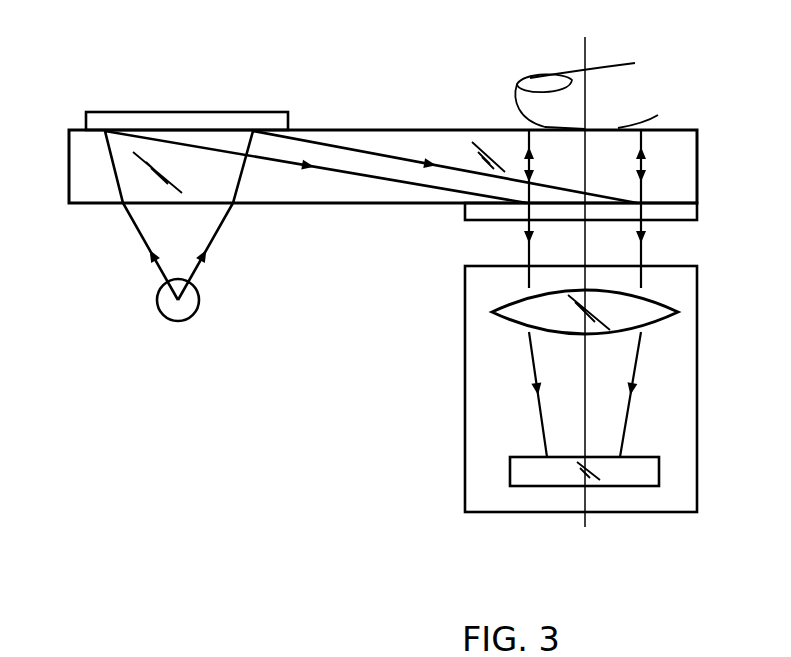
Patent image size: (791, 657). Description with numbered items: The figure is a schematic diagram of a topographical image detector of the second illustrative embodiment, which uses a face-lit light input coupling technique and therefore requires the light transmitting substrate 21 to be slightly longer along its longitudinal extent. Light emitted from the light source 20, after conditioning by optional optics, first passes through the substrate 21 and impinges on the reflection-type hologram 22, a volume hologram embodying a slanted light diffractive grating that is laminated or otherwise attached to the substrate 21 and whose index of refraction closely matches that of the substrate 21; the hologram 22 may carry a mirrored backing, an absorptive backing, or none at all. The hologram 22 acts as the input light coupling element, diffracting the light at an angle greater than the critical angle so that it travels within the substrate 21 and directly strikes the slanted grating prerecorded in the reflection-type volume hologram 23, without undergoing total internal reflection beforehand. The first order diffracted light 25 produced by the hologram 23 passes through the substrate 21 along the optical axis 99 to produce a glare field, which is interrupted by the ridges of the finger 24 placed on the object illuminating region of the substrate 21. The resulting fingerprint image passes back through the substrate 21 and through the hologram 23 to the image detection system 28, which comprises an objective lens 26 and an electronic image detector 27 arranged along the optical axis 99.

The light source 20 is at (200, 298).
The light transmitting substrate 21 is at (69, 167).
The reflection-type hologram 22 is at (125, 112).
The reflection-type volume hologram 23 is at (510, 213).
The finger 24 is at (527, 85).
The first order diffracted light 25 is at (585, 293).
The objective lens 26 is at (507, 302).
The electronic image detector 27 is at (510, 475).
The image detection system 28 is at (465, 393).
The optical axis 99 is at (585, 56).